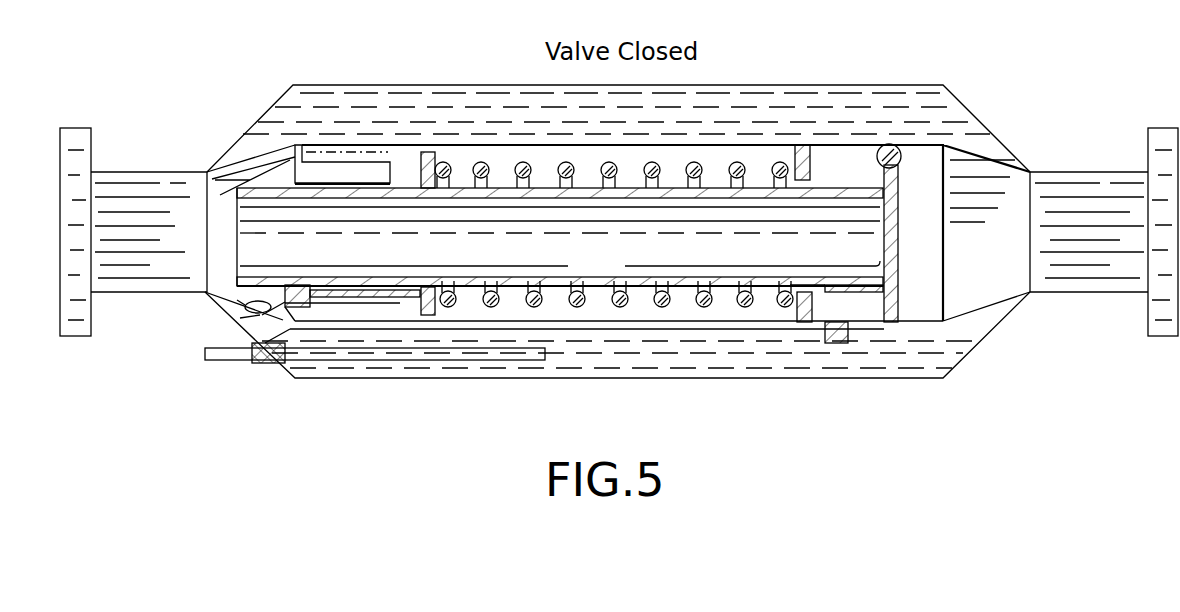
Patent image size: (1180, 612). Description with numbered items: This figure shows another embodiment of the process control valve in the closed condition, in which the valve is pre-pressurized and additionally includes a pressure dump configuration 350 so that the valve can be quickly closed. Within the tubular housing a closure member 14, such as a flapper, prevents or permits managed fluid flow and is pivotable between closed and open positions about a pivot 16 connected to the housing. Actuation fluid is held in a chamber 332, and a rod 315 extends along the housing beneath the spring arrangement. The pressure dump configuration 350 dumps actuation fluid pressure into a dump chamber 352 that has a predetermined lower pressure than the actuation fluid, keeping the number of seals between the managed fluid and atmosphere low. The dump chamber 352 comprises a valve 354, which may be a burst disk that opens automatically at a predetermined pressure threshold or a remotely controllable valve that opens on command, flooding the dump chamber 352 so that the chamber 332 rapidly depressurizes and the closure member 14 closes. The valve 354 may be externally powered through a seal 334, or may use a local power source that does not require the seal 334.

The closure member 14 is at (897, 268).
The pivot 16 is at (889, 146).
The valve body tube 315 is at (600, 267).
The chamber 332 is at (527, 368).
The seal 334 is at (246, 330).
The pressure dump configuration 350 is at (285, 172).
The dump chamber 352 is at (363, 170).
The valve 354 is at (297, 146).